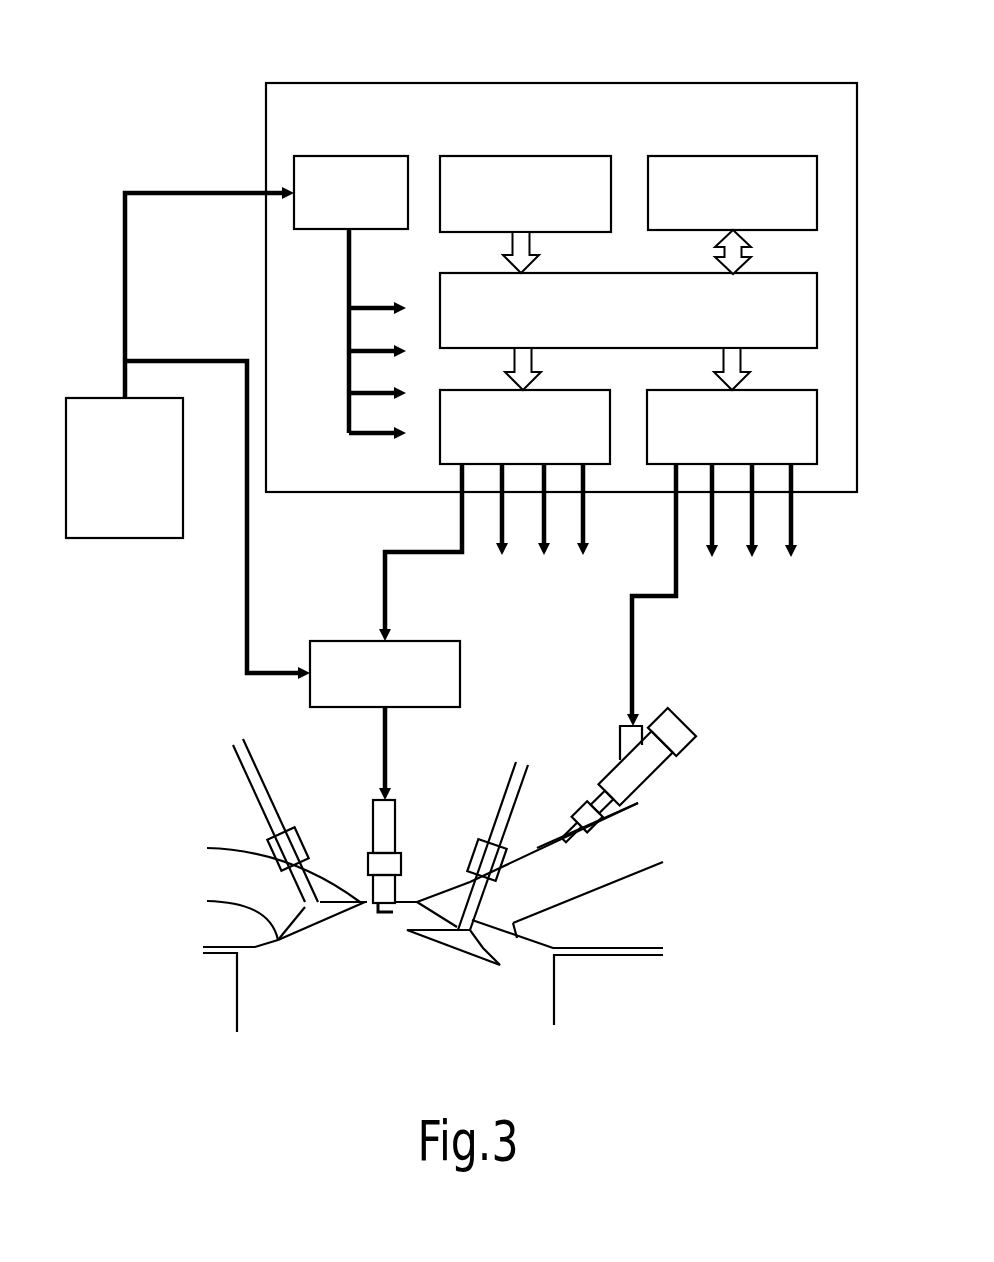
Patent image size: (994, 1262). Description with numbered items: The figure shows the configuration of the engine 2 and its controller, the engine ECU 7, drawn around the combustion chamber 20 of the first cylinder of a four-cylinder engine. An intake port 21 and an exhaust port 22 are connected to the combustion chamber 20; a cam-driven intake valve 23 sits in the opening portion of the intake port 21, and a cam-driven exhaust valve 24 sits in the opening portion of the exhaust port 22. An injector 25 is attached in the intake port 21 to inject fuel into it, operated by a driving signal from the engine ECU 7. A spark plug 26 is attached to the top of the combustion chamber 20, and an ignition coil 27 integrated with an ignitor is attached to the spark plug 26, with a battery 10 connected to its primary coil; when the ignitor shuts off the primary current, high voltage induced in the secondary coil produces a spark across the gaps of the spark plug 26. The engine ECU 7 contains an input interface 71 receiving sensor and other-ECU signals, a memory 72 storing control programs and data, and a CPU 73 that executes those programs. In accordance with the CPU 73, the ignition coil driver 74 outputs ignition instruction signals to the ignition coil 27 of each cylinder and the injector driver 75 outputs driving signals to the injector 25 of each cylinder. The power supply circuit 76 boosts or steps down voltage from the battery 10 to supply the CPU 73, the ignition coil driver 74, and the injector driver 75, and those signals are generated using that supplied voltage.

The engine 2 is at (168, 735).
The engine ECU 7 is at (593, 83).
The battery 10 is at (97, 398).
The combustion chamber 20 is at (312, 982).
The intake port 21 is at (633, 873).
The exhaust port 22 is at (243, 902).
The intake valve 23 is at (488, 838).
The exhaust valve 24 is at (275, 797).
The injector 25 is at (670, 708).
The spark plug 26 is at (368, 856).
The ignition coil 27 is at (345, 641).
The input interface 71 is at (460, 156).
The memory 72 is at (776, 156).
The CPU 73 is at (790, 273).
The ignition coil driver 74 is at (610, 437).
The injector driver 75 is at (790, 390).
The power supply circuit 76 is at (317, 156).